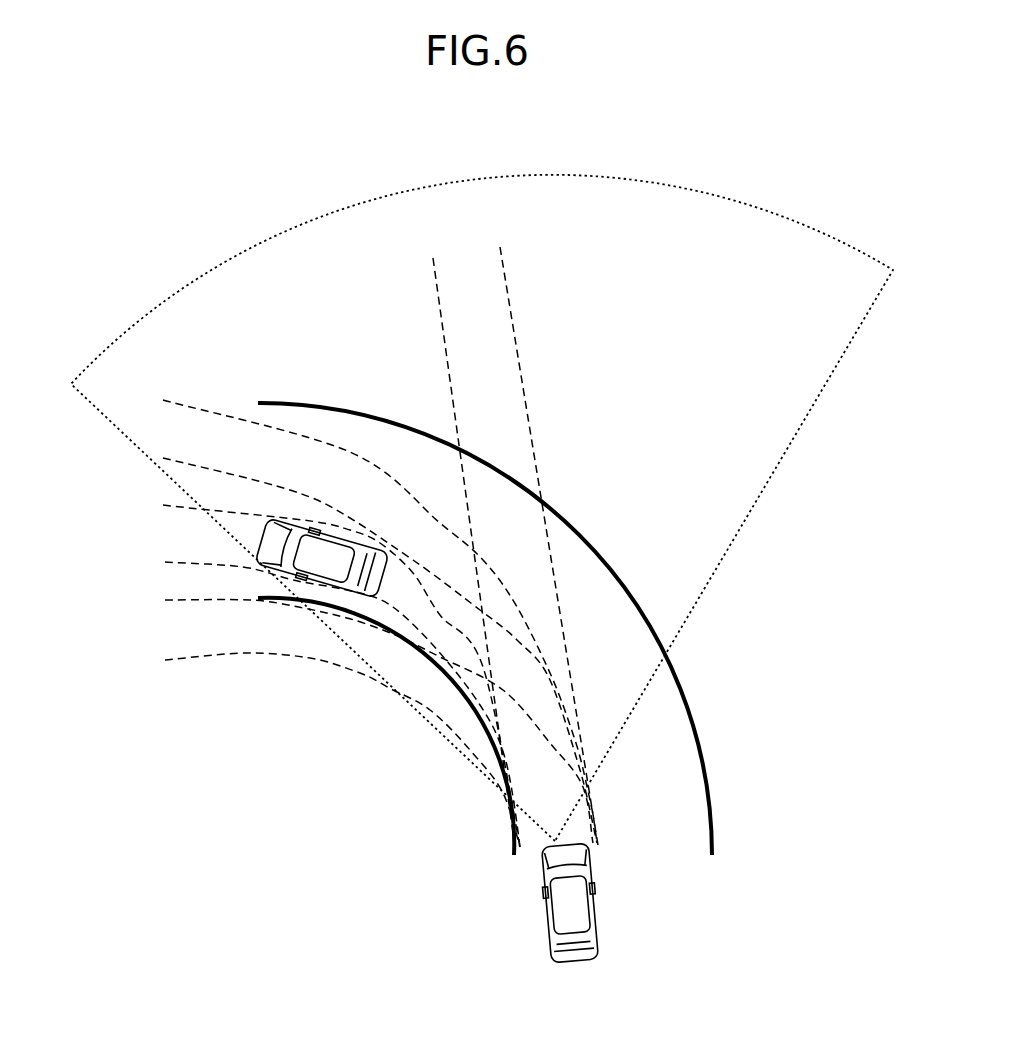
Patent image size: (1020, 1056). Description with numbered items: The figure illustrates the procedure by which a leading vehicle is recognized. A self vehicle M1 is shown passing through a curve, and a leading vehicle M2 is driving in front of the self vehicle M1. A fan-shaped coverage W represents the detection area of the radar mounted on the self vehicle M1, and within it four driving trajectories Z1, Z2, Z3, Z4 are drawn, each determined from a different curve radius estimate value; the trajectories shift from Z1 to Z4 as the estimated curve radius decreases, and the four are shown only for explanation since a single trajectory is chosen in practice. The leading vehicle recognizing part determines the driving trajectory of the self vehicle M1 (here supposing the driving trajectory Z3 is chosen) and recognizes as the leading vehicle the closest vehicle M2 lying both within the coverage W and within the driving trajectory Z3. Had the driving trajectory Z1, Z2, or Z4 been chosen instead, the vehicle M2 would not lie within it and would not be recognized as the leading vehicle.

The coverage of the radar W is at (861, 248).
The driving trajectory Z1 is at (504, 272).
The driving trajectory Z2 is at (188, 418).
The driving trajectory Z3 is at (172, 540).
The driving trajectory Z4 is at (172, 632).
The self vehicle M1 is at (582, 913).
The leading vehicle M2 is at (280, 538).